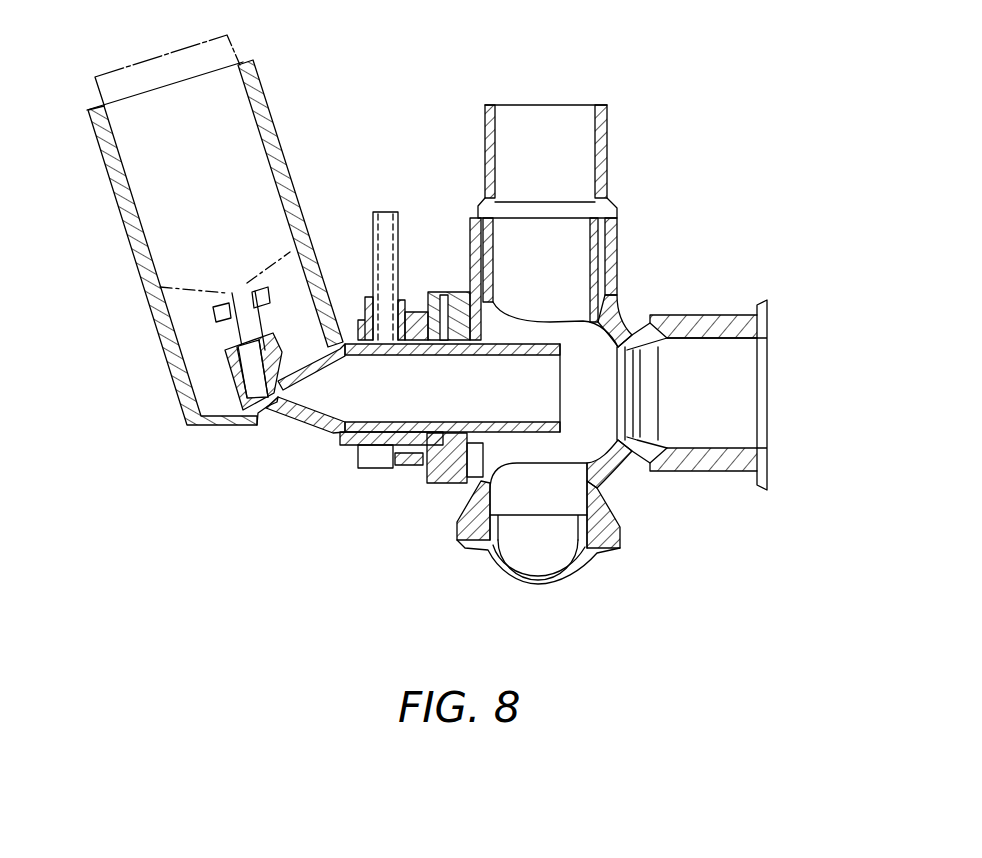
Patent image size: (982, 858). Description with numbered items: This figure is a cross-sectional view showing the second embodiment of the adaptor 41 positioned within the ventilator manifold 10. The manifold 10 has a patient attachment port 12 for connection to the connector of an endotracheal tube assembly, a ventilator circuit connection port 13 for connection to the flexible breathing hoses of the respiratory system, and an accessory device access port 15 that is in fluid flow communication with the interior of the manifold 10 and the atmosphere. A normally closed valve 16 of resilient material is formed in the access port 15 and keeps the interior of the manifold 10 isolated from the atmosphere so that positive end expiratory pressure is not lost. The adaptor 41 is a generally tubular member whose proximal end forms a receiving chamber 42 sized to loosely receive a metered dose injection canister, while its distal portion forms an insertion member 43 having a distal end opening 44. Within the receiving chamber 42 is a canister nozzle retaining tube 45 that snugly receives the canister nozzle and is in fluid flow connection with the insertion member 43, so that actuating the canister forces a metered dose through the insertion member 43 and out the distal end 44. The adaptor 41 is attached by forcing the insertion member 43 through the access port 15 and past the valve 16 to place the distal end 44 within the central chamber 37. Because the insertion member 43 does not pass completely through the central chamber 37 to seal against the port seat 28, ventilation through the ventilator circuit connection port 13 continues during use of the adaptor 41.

The ventilator manifold 10 is at (650, 297).
The patient attachment port 12 is at (705, 490).
The ventilator circuit connection port 13 is at (620, 203).
The accessory device access port 15 is at (419, 288).
The normally closed valve 16 is at (487, 482).
The port seat 28 is at (620, 430).
The central chamber 37 is at (602, 436).
The adaptor 41 is at (135, 295).
The receiving chamber 42 is at (283, 140).
The insertion member 43 is at (356, 446).
The distal end opening 44 is at (558, 358).
The canister nozzle retaining tube 45 is at (238, 368).